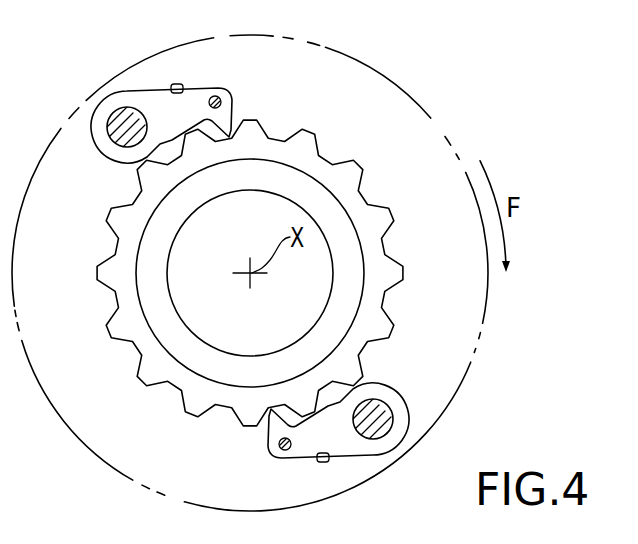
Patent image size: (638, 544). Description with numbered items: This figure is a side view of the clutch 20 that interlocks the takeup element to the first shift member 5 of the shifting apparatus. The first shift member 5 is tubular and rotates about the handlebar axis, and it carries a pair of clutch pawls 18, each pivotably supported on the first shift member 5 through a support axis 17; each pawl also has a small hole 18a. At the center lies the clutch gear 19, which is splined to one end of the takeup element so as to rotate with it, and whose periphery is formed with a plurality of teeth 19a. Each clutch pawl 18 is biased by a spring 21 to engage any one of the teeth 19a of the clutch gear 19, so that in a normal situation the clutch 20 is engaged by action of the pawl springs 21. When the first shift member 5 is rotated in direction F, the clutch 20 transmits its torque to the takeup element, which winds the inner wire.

The first shift member 5 is at (428, 115).
The support axis 17 is at (112, 120).
The clutch pawl 18 is at (260, 280).
The pawl screw hole 18a is at (222, 102).
The clutch gear 19 is at (236, 273).
The ratchet teeth 19a is at (358, 172).
The clutch 20 is at (370, 110).
The spring 21 is at (182, 86).